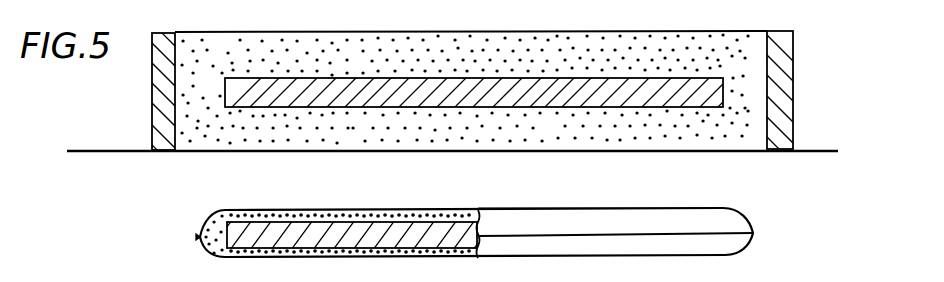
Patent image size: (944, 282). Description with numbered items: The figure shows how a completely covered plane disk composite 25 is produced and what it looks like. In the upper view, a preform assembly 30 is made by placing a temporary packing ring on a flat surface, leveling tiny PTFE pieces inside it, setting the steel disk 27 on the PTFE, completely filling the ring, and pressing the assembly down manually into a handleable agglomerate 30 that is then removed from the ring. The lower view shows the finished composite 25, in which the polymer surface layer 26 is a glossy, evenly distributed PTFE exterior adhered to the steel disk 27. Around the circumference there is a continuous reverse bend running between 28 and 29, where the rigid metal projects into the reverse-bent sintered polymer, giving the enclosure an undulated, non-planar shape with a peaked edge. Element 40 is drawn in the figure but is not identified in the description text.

In FIG. 5a, the plane disk composite 25 is at (553, 196).
In FIG. 5a, the polymer surface layer 26 is at (468, 213).
In FIG. 5a, the steel disk 27 is at (370, 232).
In FIG. 5a, the reverse bend end 28 is at (206, 224).
In FIG. 5a, the reverse bend end 29 is at (207, 250).
In FIG. 5, the preform assembly 30 is at (497, 25).
In FIG. 5a, the tube 40 is at (600, 245).